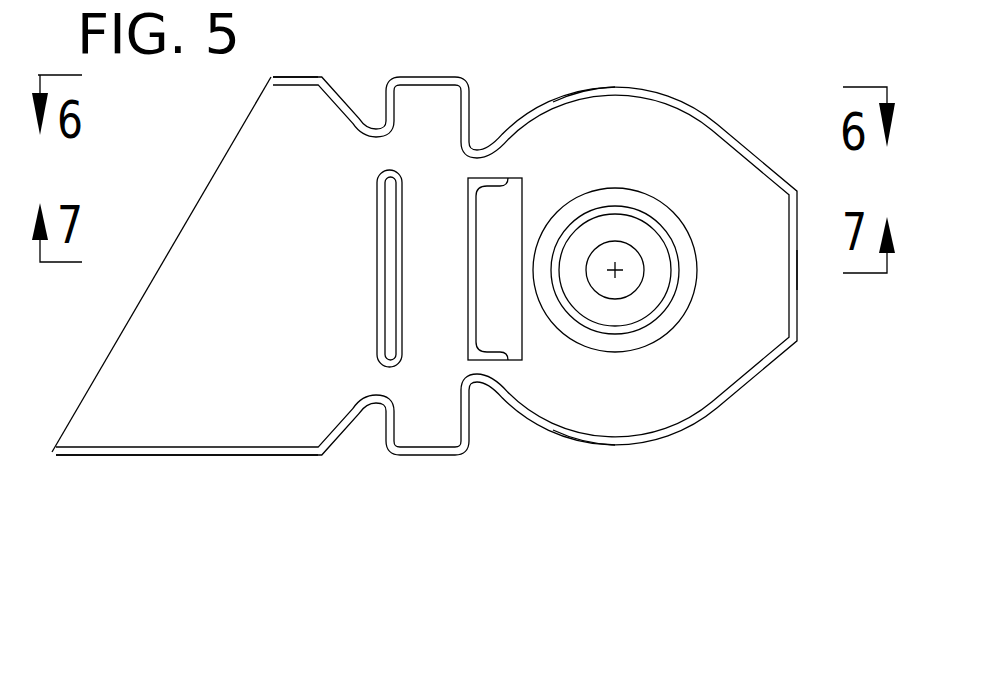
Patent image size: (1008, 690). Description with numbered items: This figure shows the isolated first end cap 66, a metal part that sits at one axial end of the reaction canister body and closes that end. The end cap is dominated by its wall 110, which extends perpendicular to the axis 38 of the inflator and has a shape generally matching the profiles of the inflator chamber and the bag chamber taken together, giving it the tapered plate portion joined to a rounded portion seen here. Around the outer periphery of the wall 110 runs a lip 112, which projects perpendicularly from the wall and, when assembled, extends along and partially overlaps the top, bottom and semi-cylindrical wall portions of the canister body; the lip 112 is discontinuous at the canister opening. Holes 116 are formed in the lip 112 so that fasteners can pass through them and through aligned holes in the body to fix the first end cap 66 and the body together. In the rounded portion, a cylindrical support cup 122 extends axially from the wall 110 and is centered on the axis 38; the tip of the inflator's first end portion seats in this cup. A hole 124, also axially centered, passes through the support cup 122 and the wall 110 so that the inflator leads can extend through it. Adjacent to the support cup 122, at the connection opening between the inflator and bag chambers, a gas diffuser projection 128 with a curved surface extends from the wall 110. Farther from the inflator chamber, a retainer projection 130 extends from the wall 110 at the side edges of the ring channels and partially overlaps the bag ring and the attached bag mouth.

The first end cap 66 is at (725, 78).
The wall 110 is at (248, 190).
The lip 112 is at (289, 78).
The holes 116 is at (558, 97).
The support cup 122 is at (626, 207).
The hole 124 is at (636, 287).
The axis 38 is at (624, 264).
The gas diffuser projection 128 is at (470, 288).
The retainer projection 130 is at (388, 287).